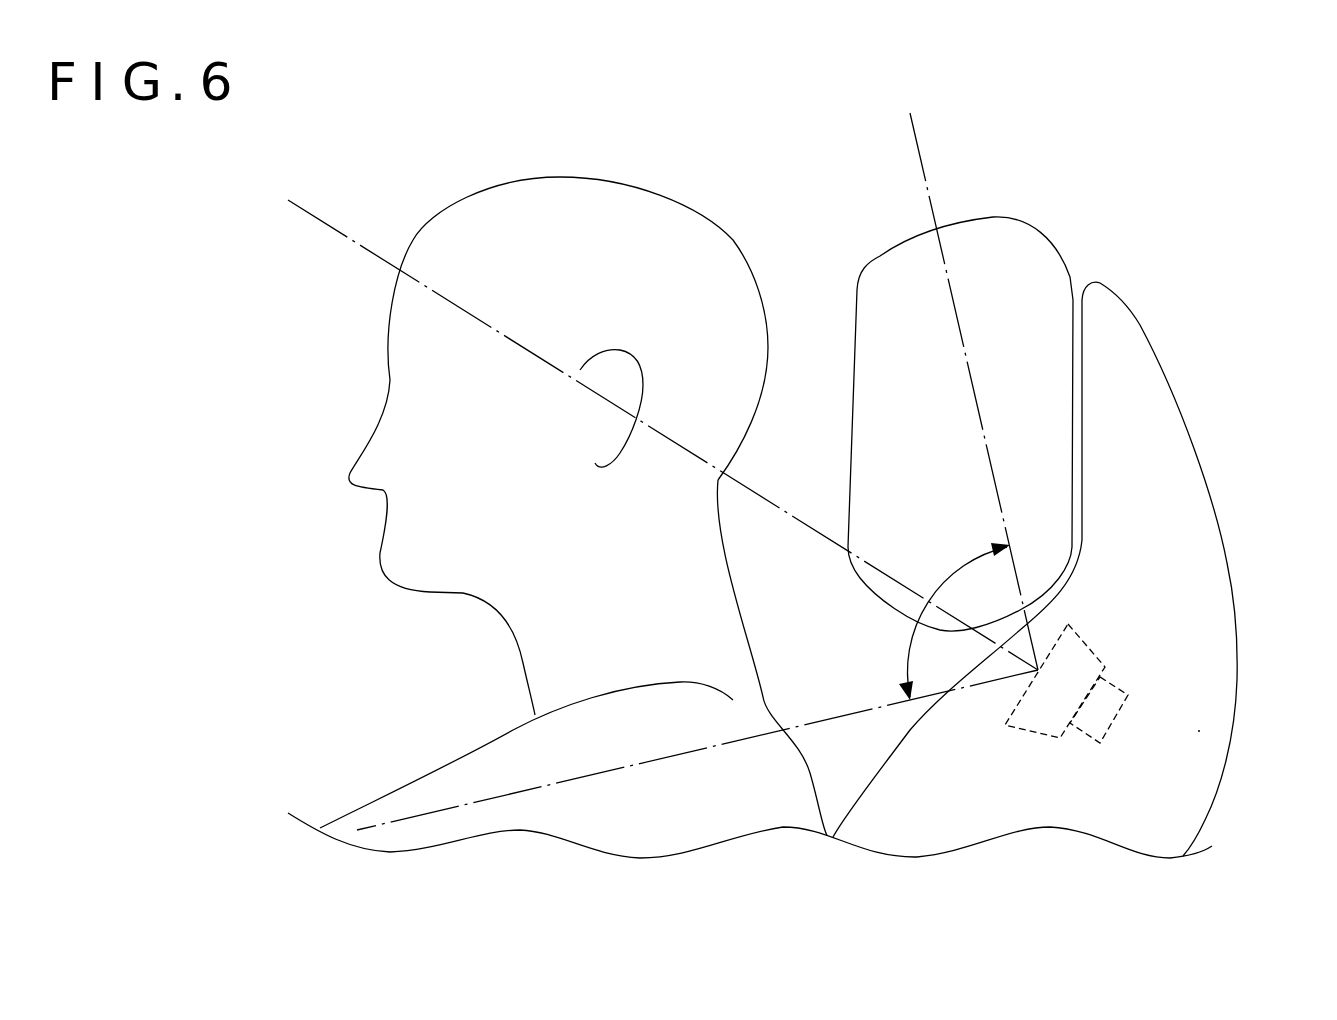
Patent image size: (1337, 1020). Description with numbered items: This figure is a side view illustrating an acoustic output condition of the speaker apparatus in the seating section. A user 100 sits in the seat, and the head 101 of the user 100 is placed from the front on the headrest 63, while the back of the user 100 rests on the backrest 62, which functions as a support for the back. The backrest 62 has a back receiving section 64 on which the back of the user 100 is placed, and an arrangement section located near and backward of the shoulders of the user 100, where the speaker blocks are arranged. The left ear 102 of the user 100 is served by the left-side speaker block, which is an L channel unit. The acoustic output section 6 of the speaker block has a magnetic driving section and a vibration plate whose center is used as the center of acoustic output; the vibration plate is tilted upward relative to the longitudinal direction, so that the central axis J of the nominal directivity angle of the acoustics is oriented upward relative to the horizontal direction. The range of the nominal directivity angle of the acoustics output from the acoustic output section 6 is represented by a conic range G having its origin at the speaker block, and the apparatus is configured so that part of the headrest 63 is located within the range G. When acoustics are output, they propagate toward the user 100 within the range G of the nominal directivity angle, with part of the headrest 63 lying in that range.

The user 100 is at (477, 752).
The head 101 is at (535, 193).
The left ear 102 is at (640, 372).
The central axis J is at (330, 227).
The conic range G is at (908, 655).
The headrest 63 is at (1017, 237).
The backrest 62 is at (1207, 592).
The back receiving section 64 is at (1198, 731).
The acoustic output section 6 is at (1090, 643).